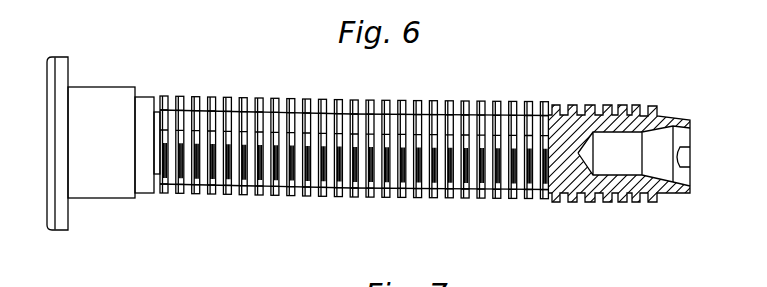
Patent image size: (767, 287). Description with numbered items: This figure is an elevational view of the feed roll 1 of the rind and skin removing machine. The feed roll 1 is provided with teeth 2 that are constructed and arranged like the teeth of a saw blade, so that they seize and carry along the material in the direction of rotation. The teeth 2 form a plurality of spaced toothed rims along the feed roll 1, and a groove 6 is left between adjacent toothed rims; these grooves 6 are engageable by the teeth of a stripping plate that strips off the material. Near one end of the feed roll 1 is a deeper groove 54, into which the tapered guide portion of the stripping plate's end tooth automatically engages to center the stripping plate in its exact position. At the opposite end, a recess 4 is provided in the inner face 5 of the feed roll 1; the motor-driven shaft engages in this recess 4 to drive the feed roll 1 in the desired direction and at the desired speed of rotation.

The feed roll 1 is at (568, 108).
The teeth 2 is at (449, 101).
The recess 4 is at (680, 170).
The inner face 5 is at (690, 119).
The groove 6 is at (272, 98).
The deeper groove 54 is at (157, 176).